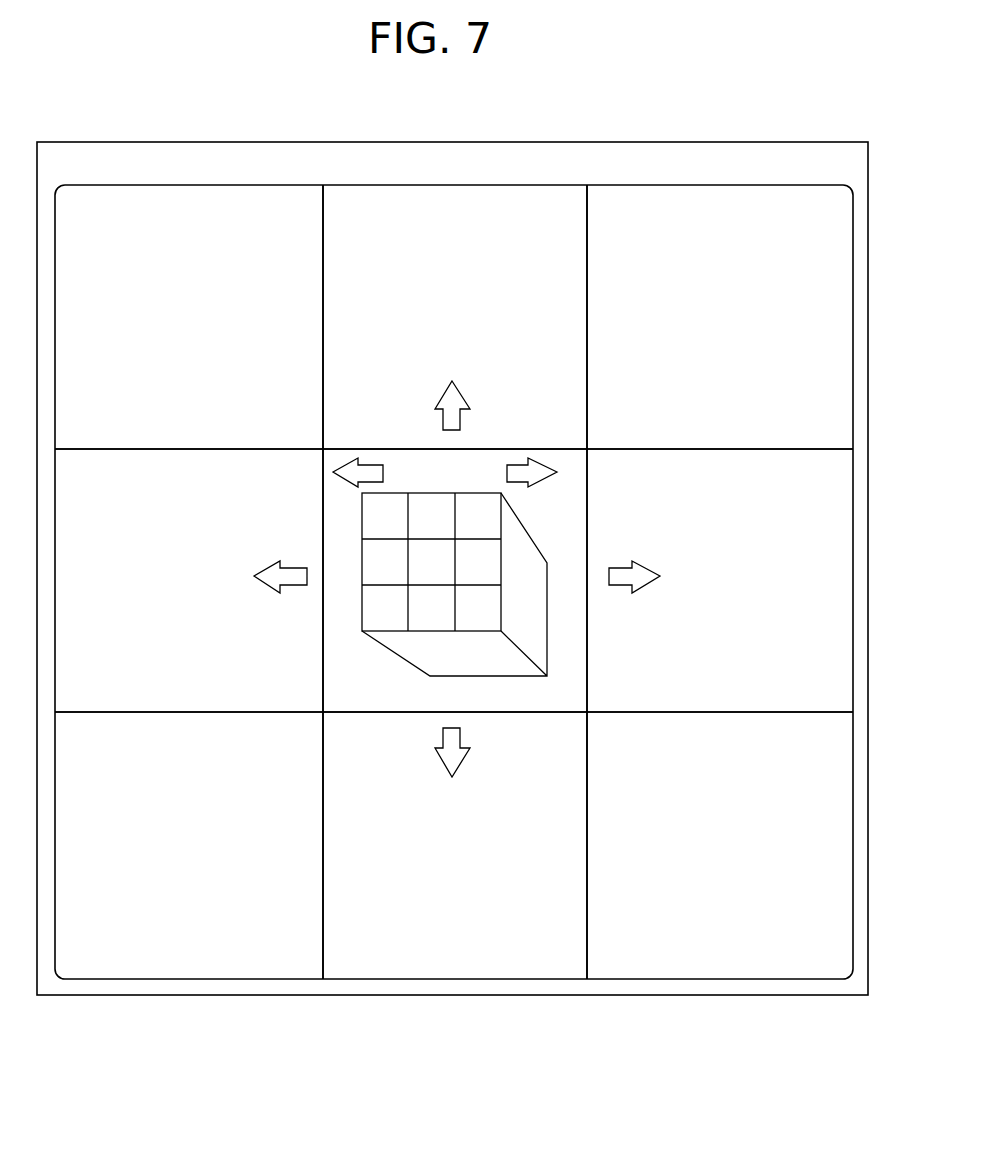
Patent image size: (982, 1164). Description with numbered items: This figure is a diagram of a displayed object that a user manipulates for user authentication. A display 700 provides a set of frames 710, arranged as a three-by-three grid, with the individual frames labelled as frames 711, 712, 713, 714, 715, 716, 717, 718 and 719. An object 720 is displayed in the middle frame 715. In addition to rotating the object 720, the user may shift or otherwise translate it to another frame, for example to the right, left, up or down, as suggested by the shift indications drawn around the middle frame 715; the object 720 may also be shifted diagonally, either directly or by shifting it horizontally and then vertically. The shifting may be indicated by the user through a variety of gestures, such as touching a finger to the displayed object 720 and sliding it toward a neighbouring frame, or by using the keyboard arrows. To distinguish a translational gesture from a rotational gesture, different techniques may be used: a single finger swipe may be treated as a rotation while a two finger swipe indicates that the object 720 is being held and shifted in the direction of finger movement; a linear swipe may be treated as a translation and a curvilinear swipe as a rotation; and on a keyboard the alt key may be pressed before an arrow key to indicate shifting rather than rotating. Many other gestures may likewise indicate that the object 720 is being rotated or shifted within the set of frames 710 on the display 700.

The display 700 is at (643, 142).
The set of frames 710 is at (210, 185).
The frame 711 is at (113, 233).
The frame 712 is at (380, 233).
The frame 713 is at (646, 233).
The frame 714 is at (113, 696).
The middle frame 715 is at (380, 696).
The frame 716 is at (646, 696).
The frame 717 is at (113, 960).
The frame 718 is at (380, 960).
The frame 719 is at (646, 960).
The object 720 is at (362, 573).